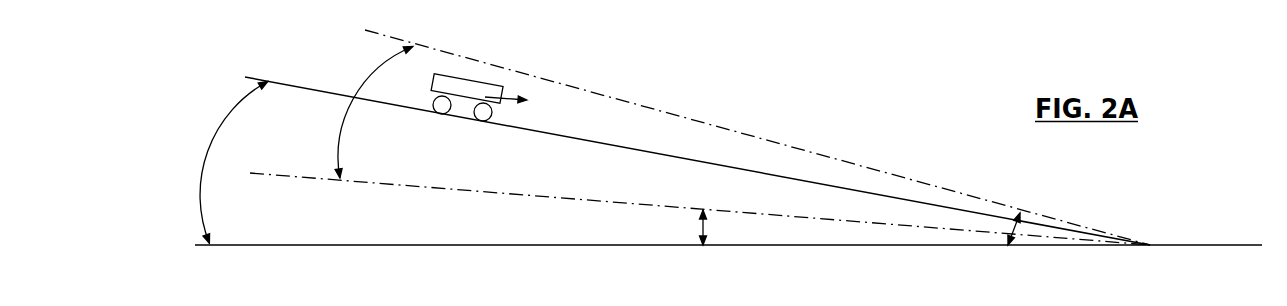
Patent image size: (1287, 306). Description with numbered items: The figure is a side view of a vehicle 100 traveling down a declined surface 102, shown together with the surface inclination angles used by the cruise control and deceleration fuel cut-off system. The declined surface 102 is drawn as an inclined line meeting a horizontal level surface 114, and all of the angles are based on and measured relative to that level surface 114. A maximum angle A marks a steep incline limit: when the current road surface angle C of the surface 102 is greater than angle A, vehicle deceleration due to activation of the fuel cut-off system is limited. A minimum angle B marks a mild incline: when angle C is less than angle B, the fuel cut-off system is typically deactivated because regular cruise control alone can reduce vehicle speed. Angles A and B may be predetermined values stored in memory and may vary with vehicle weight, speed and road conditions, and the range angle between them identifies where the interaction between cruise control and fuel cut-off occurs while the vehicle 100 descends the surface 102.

The vehicle 100 is at (485, 82).
The declined surface 102 is at (613, 146).
The level surface 114 is at (1210, 245).
The maximum angle A is at (1016, 218).
The minimum angle B is at (700, 232).
The current road surface angle C is at (216, 134).